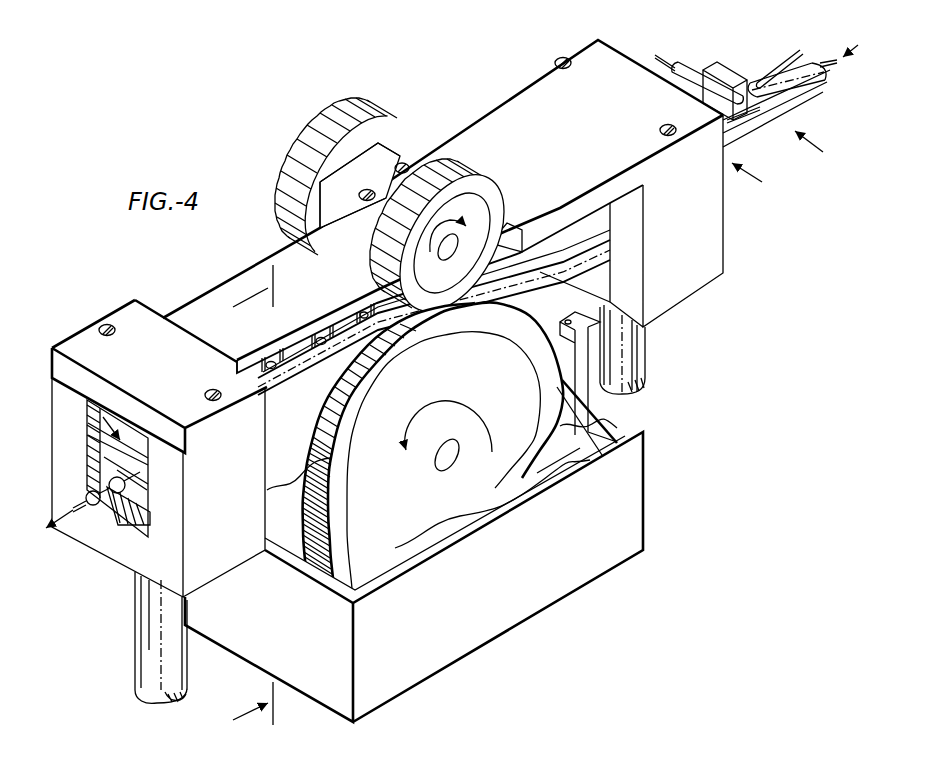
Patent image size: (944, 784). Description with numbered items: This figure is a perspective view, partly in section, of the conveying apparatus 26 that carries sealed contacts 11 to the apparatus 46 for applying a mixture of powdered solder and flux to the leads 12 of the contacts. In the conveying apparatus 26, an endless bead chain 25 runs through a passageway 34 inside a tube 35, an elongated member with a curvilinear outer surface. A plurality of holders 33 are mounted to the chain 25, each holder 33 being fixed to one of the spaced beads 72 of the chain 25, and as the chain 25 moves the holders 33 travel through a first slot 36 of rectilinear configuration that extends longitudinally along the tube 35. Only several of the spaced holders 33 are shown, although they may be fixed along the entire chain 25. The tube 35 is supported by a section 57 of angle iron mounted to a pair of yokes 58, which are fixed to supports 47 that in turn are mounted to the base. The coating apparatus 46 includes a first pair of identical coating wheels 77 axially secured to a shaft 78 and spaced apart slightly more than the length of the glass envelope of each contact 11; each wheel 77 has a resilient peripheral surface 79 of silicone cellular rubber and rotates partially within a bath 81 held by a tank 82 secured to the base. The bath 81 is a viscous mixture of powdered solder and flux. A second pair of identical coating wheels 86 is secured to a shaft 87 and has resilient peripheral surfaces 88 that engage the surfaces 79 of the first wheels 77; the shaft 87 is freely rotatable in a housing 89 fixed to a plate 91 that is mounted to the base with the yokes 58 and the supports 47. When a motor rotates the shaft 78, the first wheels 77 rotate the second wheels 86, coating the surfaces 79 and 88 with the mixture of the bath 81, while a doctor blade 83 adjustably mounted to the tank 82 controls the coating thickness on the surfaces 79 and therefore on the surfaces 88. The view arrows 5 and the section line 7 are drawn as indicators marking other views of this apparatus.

The direction of movement 5 is at (783, 164).
The section line 7- 7 is at (247, 499).
The sealed contact 11 is at (695, 62).
The leads 12 is at (673, 56).
The endless bead chain 25 is at (77, 530).
The conveying apparatus 26 is at (90, 413).
The holders 33 is at (742, 70).
The passageway 34 is at (150, 518).
The tube 35 is at (140, 500).
The first slot 36 is at (758, 83).
The apparatus 46 is at (387, 241).
The supports 47 is at (155, 702).
The section of angle iron 57 is at (563, 263).
The yokes 58 is at (213, 571).
The beads 72 is at (97, 507).
The first pair of coating wheels 77 is at (600, 422).
The shaft 78 is at (445, 468).
The resilient peripheral surface 79 is at (330, 468).
The bath 81 is at (537, 473).
The tank 82 is at (650, 507).
The doctor blade 83 is at (552, 328).
The second pair of coating wheels 86 is at (372, 143).
The shaft 87 is at (446, 256).
The resilient peripheral surfaces 88 is at (318, 123).
The housing 89 is at (405, 162).
The plate 91 is at (378, 45).